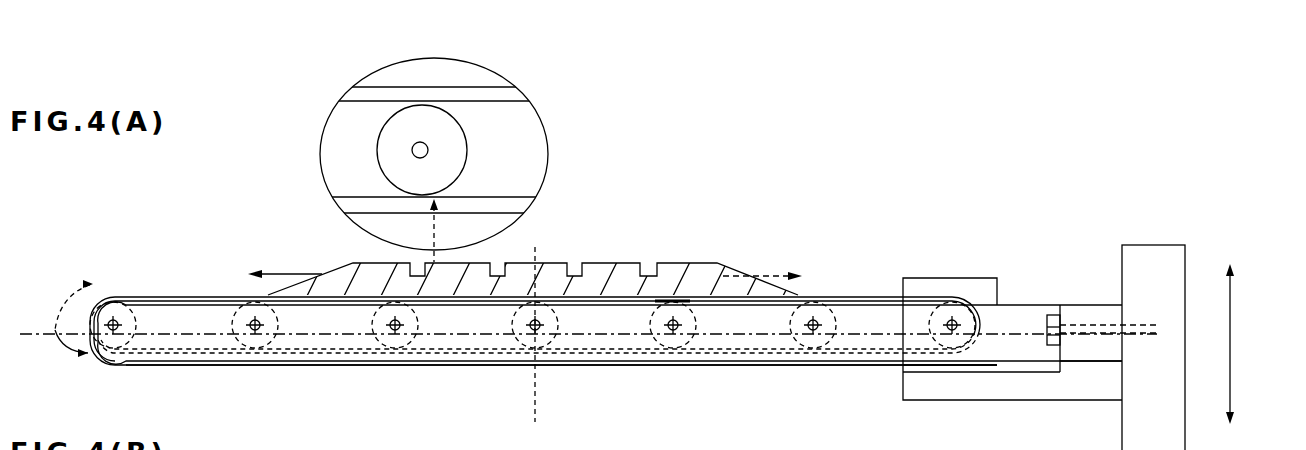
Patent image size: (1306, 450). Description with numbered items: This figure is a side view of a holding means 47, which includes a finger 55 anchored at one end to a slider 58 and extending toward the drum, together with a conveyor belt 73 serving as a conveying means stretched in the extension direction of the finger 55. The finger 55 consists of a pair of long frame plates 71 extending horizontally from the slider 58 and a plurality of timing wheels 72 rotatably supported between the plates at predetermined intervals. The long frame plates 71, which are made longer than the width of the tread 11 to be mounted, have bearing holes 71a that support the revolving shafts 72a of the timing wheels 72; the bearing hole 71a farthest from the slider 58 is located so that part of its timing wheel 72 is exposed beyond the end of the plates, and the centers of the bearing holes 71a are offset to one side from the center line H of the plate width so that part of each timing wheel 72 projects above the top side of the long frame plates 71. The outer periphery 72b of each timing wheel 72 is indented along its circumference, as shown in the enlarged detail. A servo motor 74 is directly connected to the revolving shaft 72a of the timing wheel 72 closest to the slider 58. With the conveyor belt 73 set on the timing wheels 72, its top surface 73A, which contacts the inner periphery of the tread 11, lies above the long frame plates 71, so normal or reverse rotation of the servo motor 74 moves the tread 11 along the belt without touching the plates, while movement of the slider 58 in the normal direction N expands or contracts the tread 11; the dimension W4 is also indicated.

The tread 11 is at (631, 262).
The holding means 47 is at (736, 372).
The finger 55 is at (200, 366).
The slider 58 is at (1148, 245).
The long frame plate 71 is at (450, 362).
The bearing hole 71a is at (115, 331).
The timing wheel 72 is at (461, 128).
The revolving shaft 72a is at (428, 150).
The outer periphery 72b is at (377, 137).
The conveyor belt 73 is at (478, 87).
The top surface 73A is at (673, 297).
The servo motor 74 is at (934, 278).
The center line H is at (32, 333).
The normal direction N is at (1230, 330).
The width W4 is at (540, 412).